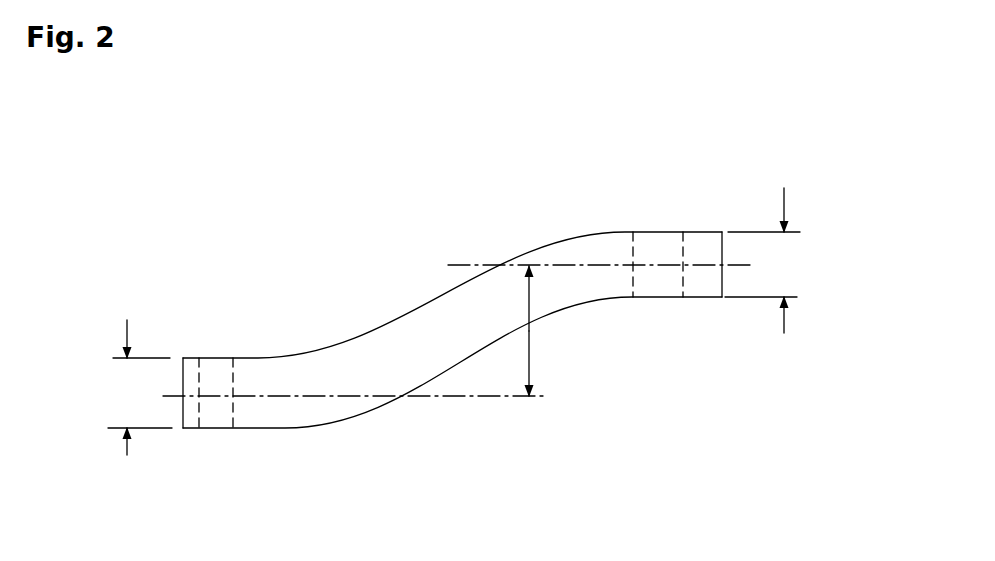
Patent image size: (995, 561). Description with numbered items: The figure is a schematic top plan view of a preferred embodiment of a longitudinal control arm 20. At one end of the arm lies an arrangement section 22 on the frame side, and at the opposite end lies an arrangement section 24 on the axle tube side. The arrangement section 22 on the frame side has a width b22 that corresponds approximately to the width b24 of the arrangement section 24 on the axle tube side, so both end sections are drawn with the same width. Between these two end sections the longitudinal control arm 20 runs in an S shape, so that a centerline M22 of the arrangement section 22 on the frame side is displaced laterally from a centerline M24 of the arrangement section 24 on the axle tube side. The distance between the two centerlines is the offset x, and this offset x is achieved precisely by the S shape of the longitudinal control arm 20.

The longitudinal control arm 20 is at (373, 285).
The arrangement section on the frame side 22 is at (203, 348).
The arrangement section on the axle tube side 24 is at (665, 215).
The centerline of the arrangement section on the frame side M22 is at (300, 397).
The centerline of the arrangement section on the axle tube side M24 is at (460, 265).
The width of the arrangement section on the frame side b22 is at (127, 455).
The width of the arrangement section on the axle tube side b24 is at (785, 330).
The offset x is at (530, 352).